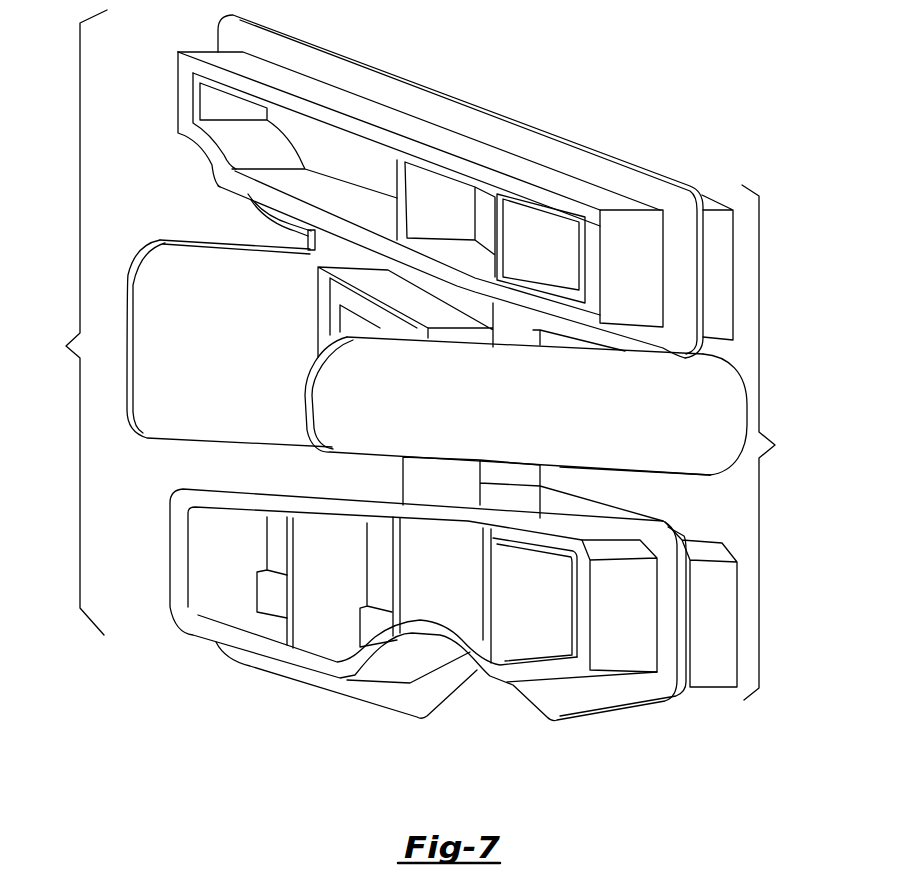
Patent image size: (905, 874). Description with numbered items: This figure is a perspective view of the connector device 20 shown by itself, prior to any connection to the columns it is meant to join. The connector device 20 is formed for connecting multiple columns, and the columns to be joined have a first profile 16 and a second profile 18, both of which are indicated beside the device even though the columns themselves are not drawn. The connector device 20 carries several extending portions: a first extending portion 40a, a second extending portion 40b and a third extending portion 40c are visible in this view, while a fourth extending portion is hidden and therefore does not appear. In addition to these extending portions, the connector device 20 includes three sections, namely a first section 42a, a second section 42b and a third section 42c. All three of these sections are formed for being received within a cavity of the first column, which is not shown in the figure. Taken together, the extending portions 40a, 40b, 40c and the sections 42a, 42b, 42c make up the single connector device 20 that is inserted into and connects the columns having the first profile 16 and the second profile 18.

The first profile 16 is at (68, 322).
The second profile 18 is at (776, 442).
The connector device 20 is at (150, 227).
The first extending portion 40a is at (330, 396).
The second extending portion 40b is at (627, 457).
The third extending portion 40c is at (152, 417).
The first section 42a is at (192, 67).
The second section 42b is at (324, 293).
The third section 42c is at (207, 633).